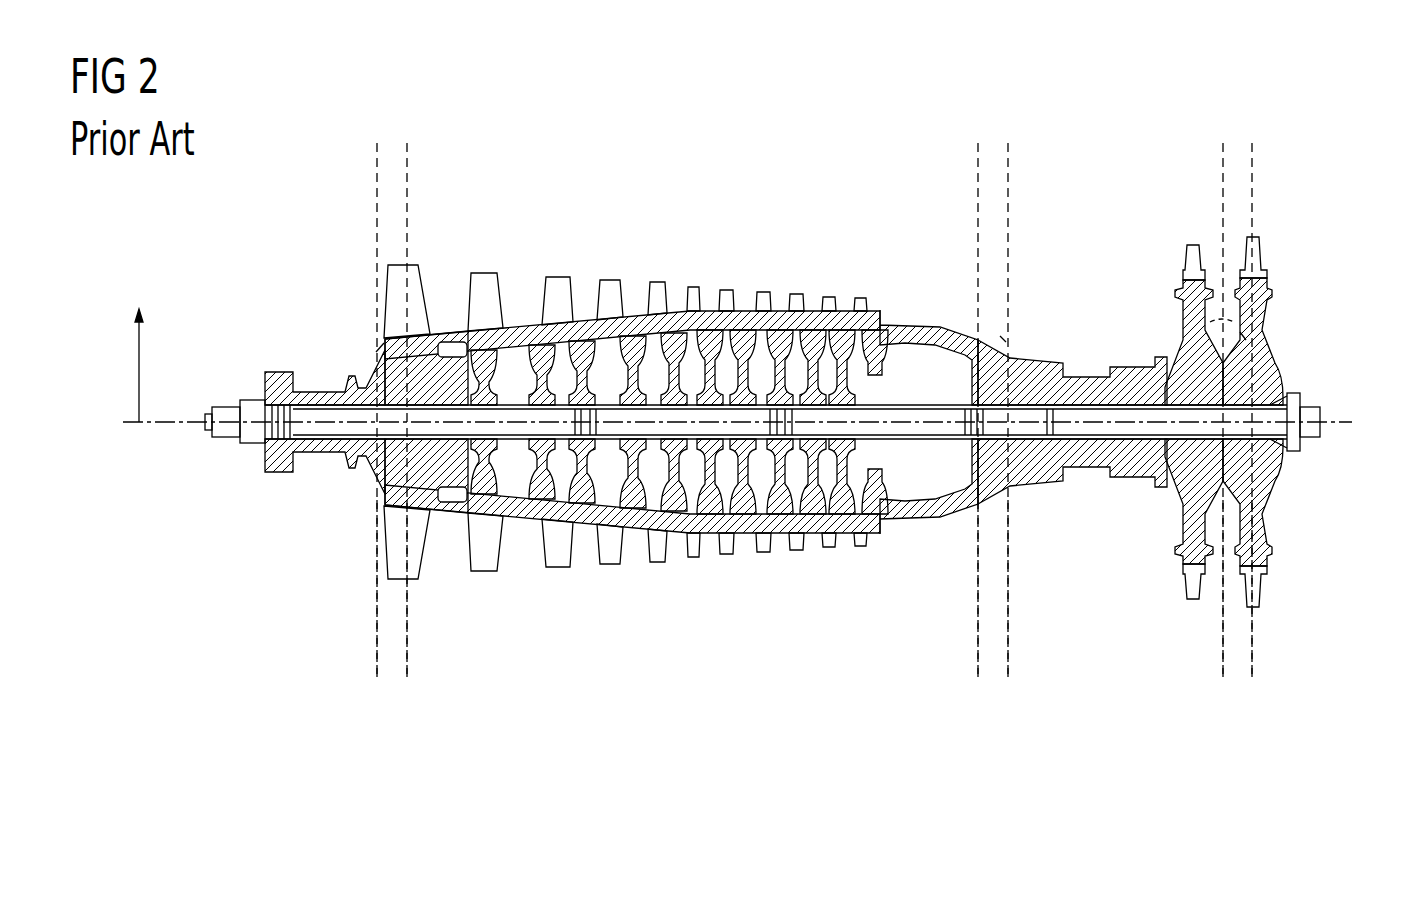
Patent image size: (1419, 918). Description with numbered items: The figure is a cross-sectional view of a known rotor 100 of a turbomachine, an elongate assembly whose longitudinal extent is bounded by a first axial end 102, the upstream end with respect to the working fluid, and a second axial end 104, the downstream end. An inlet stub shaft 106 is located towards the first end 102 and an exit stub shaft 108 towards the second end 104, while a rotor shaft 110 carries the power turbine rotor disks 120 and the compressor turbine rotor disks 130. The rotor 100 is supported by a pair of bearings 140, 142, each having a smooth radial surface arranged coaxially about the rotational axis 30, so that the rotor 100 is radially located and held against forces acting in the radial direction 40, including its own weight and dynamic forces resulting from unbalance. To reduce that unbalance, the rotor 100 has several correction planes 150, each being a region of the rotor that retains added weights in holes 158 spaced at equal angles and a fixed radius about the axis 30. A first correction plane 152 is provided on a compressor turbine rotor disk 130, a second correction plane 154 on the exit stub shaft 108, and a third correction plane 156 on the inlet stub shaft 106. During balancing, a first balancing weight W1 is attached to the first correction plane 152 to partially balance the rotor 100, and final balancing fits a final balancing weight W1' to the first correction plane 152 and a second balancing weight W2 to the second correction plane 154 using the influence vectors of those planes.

The rotor 100 is at (262, 174).
The first axial end 102 is at (205, 426).
The second axial end 104 is at (1325, 433).
The inlet stub shaft 106 is at (646, 407).
The exit stub shaft 108 is at (1190, 422).
The rotor shaft 110 is at (226, 396).
The power turbine rotor disks 120 is at (727, 293).
The compressor turbine rotor disks 130 is at (1283, 370).
The bearing 140 is at (313, 450).
The bearing 142 is at (1093, 468).
The correction plane 150 is at (393, 668).
The first correction plane 152 is at (1238, 142).
The second correction plane 154 is at (993, 142).
The third correction plane 156 is at (392, 142).
The holes 158 is at (383, 348).
The rotational axis 30 is at (184, 412).
The radial direction 40 is at (137, 359).
The first balancing weight W1 is at (1181, 334).
The final balancing weight W1' is at (1097, 334).
The second balancing weight W2 is at (975, 335).